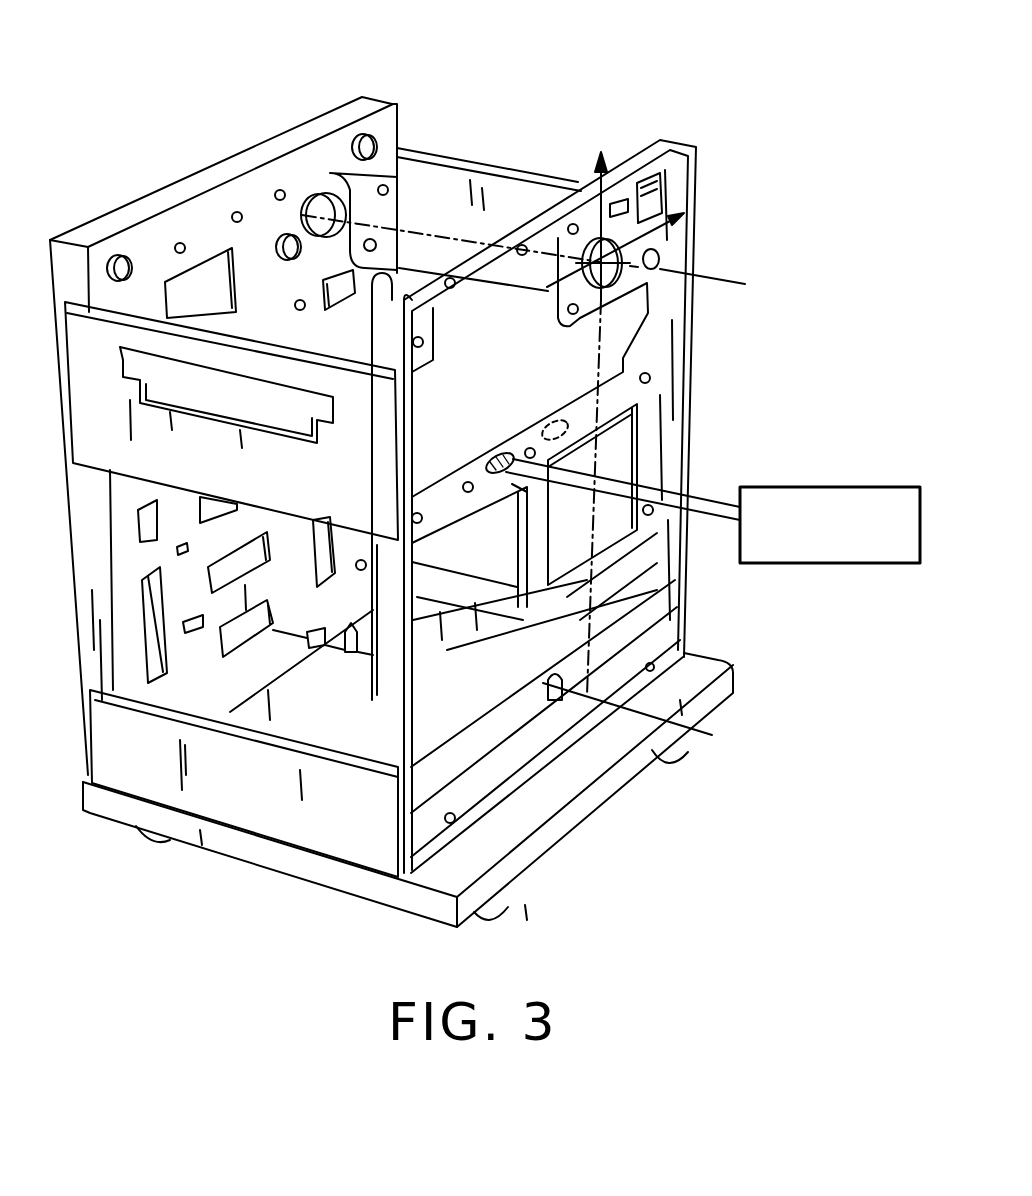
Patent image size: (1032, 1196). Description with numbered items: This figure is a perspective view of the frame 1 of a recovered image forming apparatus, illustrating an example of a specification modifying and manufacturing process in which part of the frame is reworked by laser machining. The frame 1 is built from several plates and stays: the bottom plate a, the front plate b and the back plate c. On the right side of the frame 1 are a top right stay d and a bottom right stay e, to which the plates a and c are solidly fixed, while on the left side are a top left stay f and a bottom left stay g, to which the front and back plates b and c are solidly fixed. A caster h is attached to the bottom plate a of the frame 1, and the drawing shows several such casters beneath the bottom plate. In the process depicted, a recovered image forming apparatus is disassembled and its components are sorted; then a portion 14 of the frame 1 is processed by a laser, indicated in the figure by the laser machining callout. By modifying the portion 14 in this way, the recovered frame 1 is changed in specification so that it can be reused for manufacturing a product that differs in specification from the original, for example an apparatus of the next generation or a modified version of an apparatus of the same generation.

The frame 1 is at (729, 97).
The bottom plate a is at (560, 792).
The front plate b is at (640, 167).
The back plate c is at (262, 152).
The top right stay d is at (455, 165).
The bottom right stay e is at (458, 596).
The top left stay f is at (230, 357).
The bottom left stay g is at (273, 763).
The caster h is at (147, 843).
The portion of the frame 14 is at (500, 460).